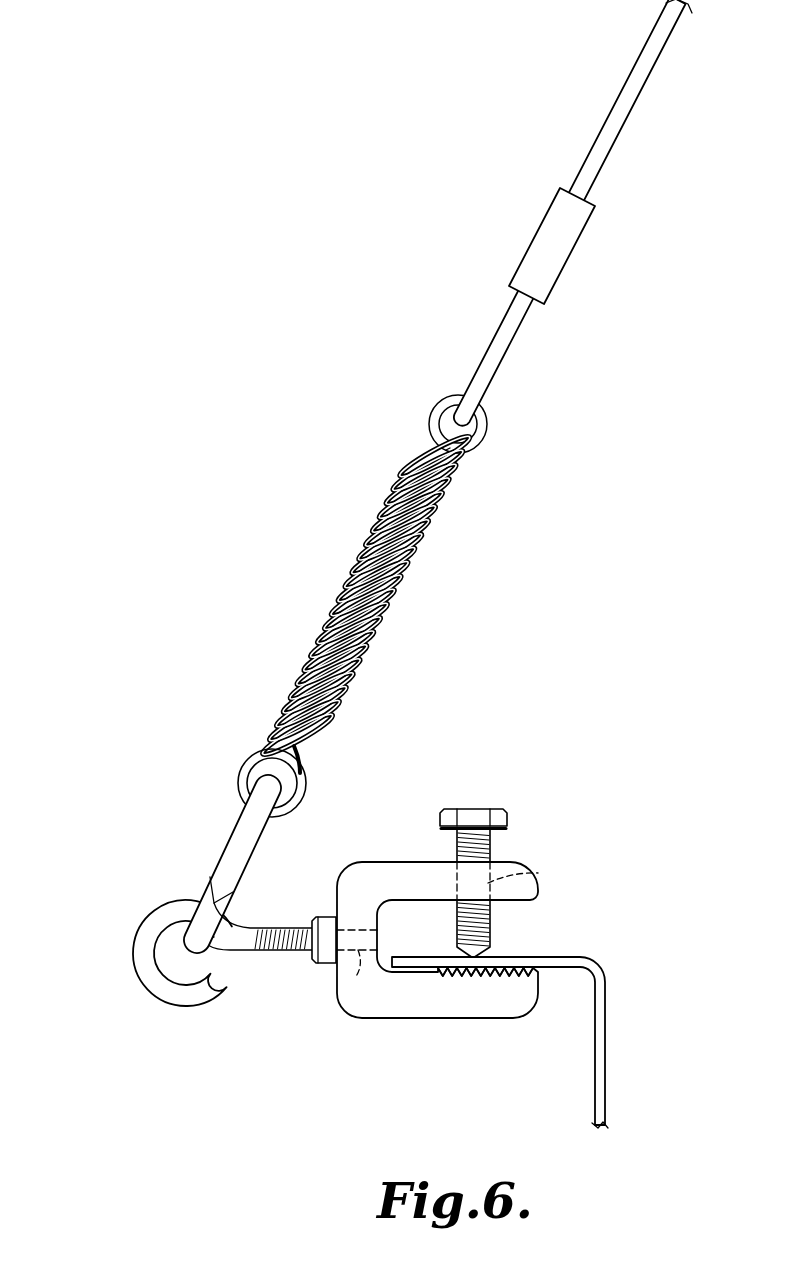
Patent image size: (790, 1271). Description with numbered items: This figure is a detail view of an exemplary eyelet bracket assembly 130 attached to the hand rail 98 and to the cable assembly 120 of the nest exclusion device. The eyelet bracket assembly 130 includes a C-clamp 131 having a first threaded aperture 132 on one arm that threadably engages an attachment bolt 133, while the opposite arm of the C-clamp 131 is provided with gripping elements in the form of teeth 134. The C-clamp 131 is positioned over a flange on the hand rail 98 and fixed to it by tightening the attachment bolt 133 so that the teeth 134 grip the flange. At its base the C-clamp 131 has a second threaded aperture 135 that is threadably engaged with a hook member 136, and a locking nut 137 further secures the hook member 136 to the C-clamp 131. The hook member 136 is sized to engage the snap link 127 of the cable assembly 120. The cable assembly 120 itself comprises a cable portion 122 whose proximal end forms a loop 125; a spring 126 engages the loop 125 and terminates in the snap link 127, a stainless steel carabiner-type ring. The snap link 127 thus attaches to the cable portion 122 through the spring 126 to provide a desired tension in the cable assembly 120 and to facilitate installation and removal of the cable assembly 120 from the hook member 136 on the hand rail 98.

The hand rail 98 is at (607, 1008).
The cable assembly 120 is at (313, 473).
The cable portion 122 is at (600, 135).
The loop 125 is at (484, 357).
The spring 126 is at (328, 612).
The snap link 127 is at (236, 828).
The eyelet bracket assembly 130 is at (437, 899).
The C-clamp 131 is at (392, 863).
The first threaded aperture 132 is at (523, 833).
The attachment bolt 133 is at (478, 808).
The teeth 134 is at (462, 977).
The second threaded aperture 135 is at (355, 978).
The hook member 136 is at (141, 927).
The locking nut 137 is at (325, 920).